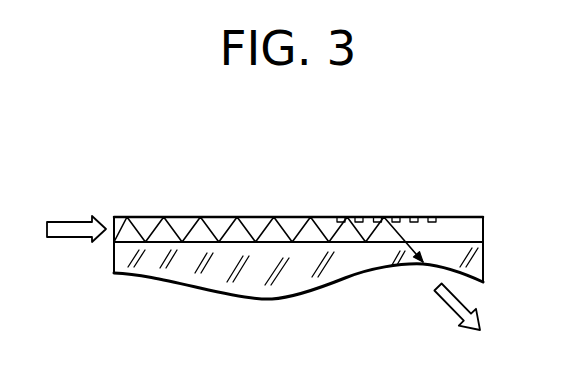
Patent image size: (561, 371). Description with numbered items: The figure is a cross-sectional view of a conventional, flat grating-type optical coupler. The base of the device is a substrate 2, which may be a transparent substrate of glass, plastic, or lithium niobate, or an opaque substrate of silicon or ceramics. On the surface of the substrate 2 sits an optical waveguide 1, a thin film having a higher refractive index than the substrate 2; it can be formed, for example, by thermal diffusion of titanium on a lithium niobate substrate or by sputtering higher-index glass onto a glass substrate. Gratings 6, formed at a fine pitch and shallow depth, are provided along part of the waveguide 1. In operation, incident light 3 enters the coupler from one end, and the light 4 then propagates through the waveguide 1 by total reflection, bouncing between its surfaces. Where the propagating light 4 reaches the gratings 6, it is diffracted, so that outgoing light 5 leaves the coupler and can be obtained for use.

The optical waveguide 1 is at (460, 222).
The substrate 2 is at (293, 273).
The incident light 3 is at (68, 225).
The light propagating through the waveguide 4 is at (138, 233).
The outgoing light 5 is at (457, 310).
The gratings 6 is at (358, 217).